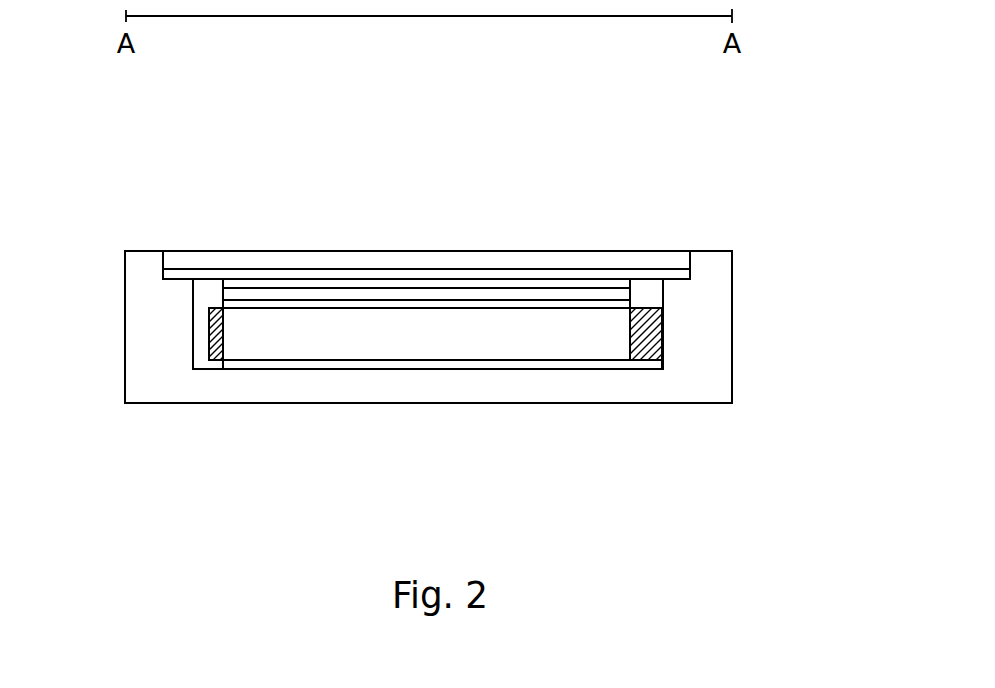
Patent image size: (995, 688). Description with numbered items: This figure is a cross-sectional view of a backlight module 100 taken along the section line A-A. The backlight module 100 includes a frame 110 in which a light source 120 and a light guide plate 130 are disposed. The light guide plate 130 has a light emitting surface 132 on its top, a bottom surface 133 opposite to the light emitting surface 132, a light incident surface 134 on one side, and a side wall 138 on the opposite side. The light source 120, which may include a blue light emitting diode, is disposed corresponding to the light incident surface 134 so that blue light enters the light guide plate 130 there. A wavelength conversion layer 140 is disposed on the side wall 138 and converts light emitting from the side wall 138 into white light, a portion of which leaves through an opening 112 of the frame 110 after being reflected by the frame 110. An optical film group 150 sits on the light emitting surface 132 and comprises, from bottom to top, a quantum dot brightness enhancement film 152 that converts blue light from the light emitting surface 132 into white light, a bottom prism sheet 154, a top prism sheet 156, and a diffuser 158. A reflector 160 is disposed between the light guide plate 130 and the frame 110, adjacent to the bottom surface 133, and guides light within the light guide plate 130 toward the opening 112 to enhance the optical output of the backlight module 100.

The backlight module 100 is at (98, 109).
The frame 110 is at (703, 302).
The opening 112 is at (683, 252).
The light source 120 is at (650, 342).
The light guide plate 130 is at (523, 347).
The light emitting surface 132 is at (360, 314).
The bottom surface 133 is at (465, 364).
The light incident surface 134 is at (622, 339).
The side wall 138 is at (235, 340).
The wavelength conversion layer 140 is at (212, 326).
The optical film group 150 is at (553, 143).
The quantum dot brightness enhancement film 152 is at (263, 305).
The bottom prism sheet 154 is at (358, 296).
The top prism sheet 156 is at (440, 289).
The diffuser 158 is at (527, 275).
The reflector 160 is at (618, 365).